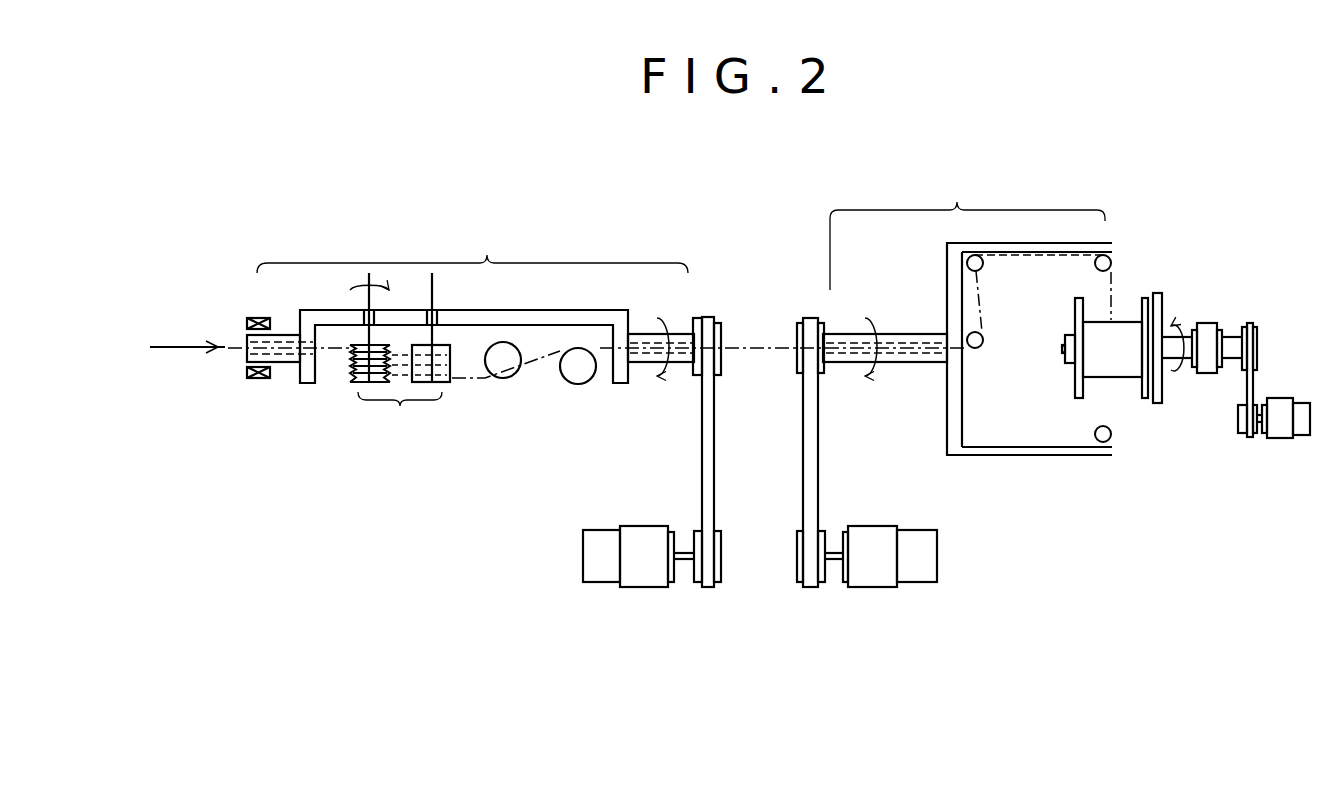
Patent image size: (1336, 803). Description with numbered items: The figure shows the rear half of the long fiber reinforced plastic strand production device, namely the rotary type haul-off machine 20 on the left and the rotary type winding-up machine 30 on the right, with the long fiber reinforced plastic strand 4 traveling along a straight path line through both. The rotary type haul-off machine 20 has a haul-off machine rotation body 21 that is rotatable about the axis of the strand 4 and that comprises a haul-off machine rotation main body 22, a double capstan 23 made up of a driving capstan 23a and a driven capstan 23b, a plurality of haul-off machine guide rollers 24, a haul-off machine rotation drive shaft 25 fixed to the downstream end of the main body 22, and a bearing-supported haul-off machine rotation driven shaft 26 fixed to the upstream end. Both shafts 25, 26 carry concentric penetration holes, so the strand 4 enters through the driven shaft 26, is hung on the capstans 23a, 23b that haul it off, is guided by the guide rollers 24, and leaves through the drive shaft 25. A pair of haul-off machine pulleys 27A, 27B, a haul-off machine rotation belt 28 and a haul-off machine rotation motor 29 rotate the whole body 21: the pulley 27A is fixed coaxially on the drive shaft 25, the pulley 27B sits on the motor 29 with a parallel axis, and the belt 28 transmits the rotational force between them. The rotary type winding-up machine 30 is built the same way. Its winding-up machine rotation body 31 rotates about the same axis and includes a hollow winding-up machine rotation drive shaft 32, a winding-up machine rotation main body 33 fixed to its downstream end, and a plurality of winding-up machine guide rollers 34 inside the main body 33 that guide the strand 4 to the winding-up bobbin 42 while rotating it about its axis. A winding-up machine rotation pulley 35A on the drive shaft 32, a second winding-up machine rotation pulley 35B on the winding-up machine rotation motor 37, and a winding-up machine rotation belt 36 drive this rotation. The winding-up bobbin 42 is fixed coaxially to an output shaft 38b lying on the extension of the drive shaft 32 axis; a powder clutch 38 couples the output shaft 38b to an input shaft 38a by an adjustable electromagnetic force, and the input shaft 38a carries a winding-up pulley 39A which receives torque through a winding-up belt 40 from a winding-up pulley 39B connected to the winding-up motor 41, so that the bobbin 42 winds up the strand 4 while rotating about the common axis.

The long fiber reinforced plastic strand 4 is at (175, 347).
The rotary type haul-off machine 20 is at (428, 628).
The haul-off machine rotation body 21 is at (470, 340).
The haul-off machine rotation main body 22 is at (512, 308).
The double capstan 23 is at (410, 364).
The driving capstan 23a is at (351, 385).
The driven capstan 23b is at (447, 385).
The haul-off machine guide rollers 24 is at (503, 365).
The haul-off machine rotation drive shaft 25 is at (650, 335).
The haul-off machine rotation driven shaft 26 is at (282, 338).
The haul-off machine pulley 27A is at (692, 372).
The haul-off machine pulley 27B is at (692, 535).
The haul-off machine rotation belt 28 is at (702, 440).
The haul-off machine rotation motor 29 is at (604, 526).
The rotary type winding-up machine 30 is at (1018, 628).
The winding-up machine rotation body 31 is at (967, 312).
The winding-up machine rotation drive shaft 32 is at (913, 338).
The winding-up machine rotation main body 33 is at (1012, 242).
The winding-up machine guide rollers 34 is at (978, 271).
The winding-up machine rotation pulley 35A is at (827, 372).
The winding-up machine rotation pulley 35B is at (826, 538).
The winding-up machine rotation belt 36 is at (818, 440).
The winding-up machine rotation motor 37 is at (912, 526).
The powder clutch 38 is at (1205, 320).
The input shaft 38a is at (1230, 345).
The output shaft 38b is at (1168, 332).
The winding-up pulley 39A is at (1255, 340).
The winding-up pulley 39B is at (1237, 418).
The winding-up belt 40 is at (1252, 383).
The winding-up motor 41 is at (1300, 441).
The winding-up bobbin 42 is at (1125, 380).